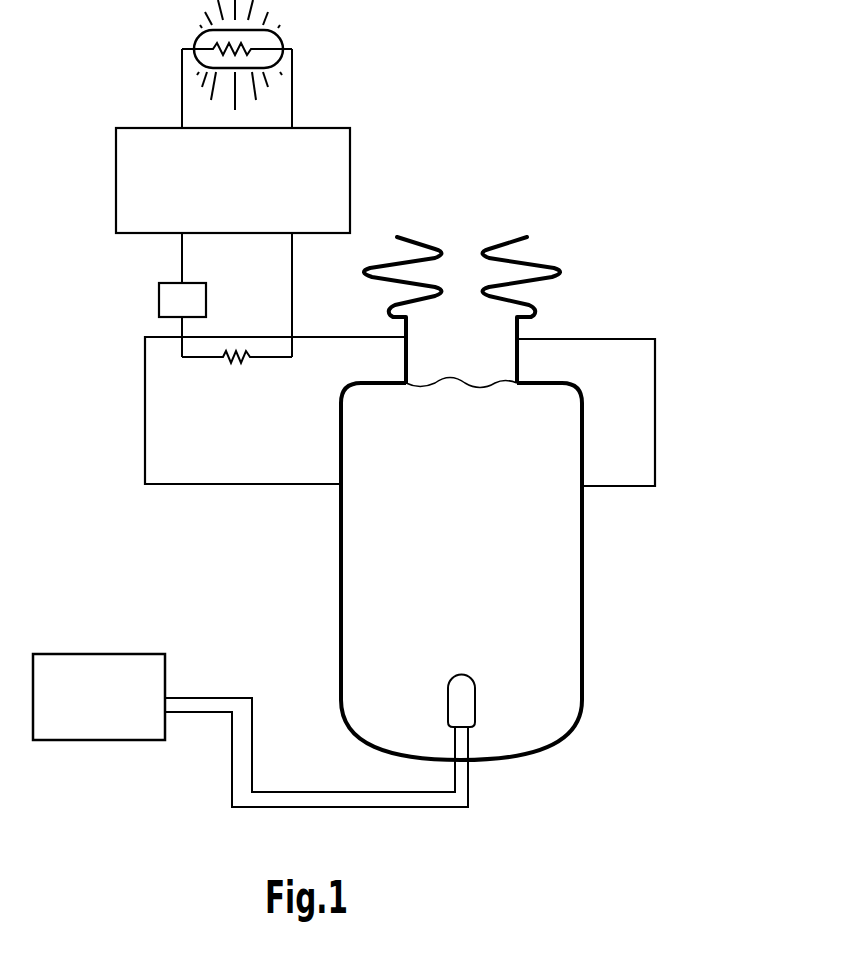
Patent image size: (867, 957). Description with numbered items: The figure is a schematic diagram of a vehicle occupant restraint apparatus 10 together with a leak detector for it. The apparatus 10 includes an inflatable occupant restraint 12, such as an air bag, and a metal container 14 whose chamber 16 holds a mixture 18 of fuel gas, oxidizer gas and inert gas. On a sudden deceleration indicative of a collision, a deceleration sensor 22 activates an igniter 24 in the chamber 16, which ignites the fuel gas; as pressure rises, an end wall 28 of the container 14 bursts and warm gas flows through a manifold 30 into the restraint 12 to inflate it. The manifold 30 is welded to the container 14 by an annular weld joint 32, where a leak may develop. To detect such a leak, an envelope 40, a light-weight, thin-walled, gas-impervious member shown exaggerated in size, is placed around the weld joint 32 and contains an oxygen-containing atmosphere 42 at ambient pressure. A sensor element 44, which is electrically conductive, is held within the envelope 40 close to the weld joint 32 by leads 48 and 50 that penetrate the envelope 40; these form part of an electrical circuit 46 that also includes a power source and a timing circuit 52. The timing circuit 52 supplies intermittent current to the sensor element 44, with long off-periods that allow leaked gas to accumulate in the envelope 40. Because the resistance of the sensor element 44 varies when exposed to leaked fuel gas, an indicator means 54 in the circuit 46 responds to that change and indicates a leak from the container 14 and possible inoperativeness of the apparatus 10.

The vehicle occupant restraint apparatus 10 is at (682, 302).
The inflatable occupant restraint 12 is at (542, 263).
The container 14 is at (582, 667).
The chamber 16 is at (430, 564).
The mixture of gases 18 is at (503, 603).
The deceleration sensor 22 is at (88, 672).
The igniter 24 is at (460, 700).
The end wall 28 is at (460, 373).
The manifold 30 is at (522, 330).
The annular weld joint 32 is at (518, 383).
The envelope 40 is at (655, 410).
The atmosphere 42 is at (163, 440).
The sensor element 44 is at (234, 362).
The electrical circuit 46 is at (336, 127).
The lead 48 is at (183, 258).
The lead 50 is at (292, 298).
The timing circuit 52 is at (158, 307).
The indicator means 54 is at (283, 43).